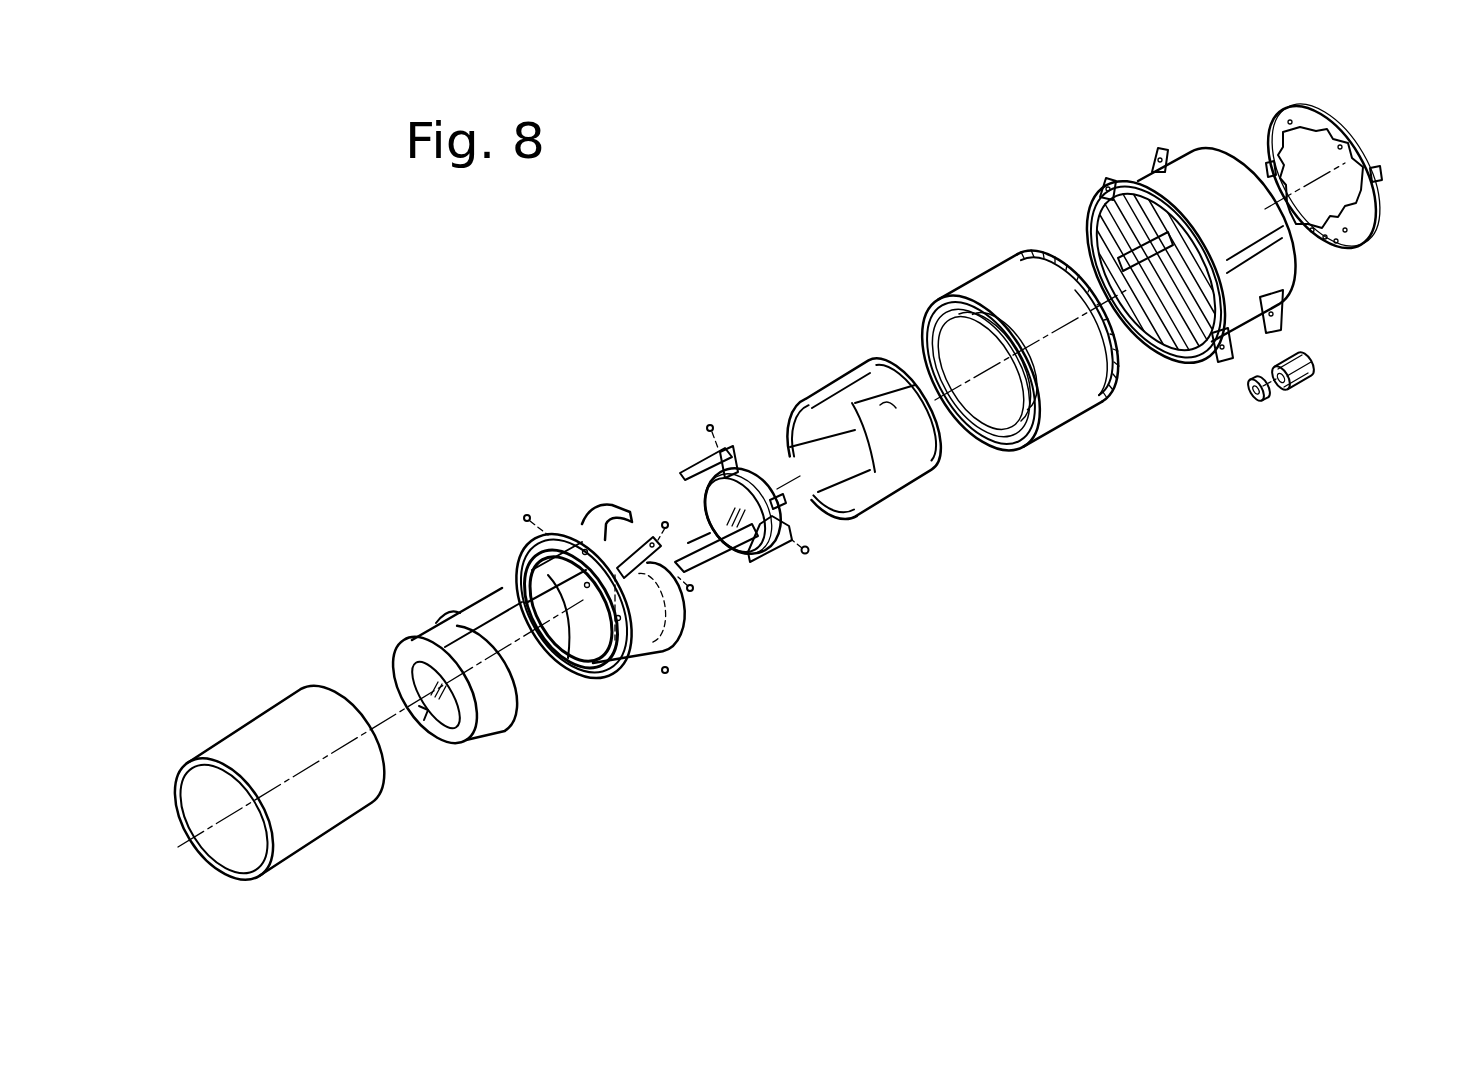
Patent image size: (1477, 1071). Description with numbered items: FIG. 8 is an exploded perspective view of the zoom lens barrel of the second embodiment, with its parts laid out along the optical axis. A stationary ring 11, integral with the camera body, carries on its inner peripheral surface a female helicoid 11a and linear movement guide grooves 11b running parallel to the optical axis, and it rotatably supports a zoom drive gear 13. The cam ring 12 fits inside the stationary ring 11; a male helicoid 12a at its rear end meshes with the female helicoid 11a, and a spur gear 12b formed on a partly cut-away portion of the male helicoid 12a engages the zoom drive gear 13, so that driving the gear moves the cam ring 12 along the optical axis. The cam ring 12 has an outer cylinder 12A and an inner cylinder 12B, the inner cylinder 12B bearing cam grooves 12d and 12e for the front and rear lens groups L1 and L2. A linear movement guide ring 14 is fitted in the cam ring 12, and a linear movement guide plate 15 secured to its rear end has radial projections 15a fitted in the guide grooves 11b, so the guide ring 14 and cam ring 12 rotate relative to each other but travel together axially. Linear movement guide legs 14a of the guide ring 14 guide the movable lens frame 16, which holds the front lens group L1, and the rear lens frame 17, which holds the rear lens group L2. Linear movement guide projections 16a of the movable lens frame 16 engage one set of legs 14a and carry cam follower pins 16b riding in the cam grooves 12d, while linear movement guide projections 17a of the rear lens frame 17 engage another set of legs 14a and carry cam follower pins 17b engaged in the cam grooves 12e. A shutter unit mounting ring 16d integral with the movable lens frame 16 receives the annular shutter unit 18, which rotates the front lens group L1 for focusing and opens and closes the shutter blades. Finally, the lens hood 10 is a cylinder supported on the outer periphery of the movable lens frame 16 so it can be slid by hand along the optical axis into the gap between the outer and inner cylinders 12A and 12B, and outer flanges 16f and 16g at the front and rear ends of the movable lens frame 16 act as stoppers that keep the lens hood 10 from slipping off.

The lens hood 10 is at (268, 735).
The annular shutter unit 18 is at (481, 666).
The front lens group L1 is at (477, 722).
The movable lens frame 16 is at (634, 588).
The linear movement guide projections 16a is at (637, 533).
The cam follower pins 16b is at (667, 520).
The shutter unit mounting ring 16d is at (613, 507).
The outer flange 16f is at (643, 660).
The outer flange 16g is at (688, 627).
The rear lens frame 17 is at (759, 501).
The linear movement guide projections 17a is at (692, 462).
The cam follower pins 17b is at (810, 560).
The rear lens group L2 is at (748, 545).
The linear movement guide ring 14 is at (867, 429).
The linear movement guide legs 14a is at (897, 478).
The cam ring 12 is at (1007, 348).
The outer cylinder 12A is at (970, 293).
The inner cylinder 12B is at (928, 327).
The male helicoid 12a is at (1103, 347).
The spur gear 12b is at (1070, 330).
The cam grooves 12d is at (1010, 413).
The cam grooves 12e is at (972, 365).
The stationary ring 11 is at (1174, 248).
The female helicoid 11a is at (1173, 320).
The linear movement guide grooves 11b is at (1140, 257).
The linear movement guide plate 15 is at (1338, 150).
The radial projections 15a is at (1273, 170).
The zoom drive gear 13 is at (1303, 377).